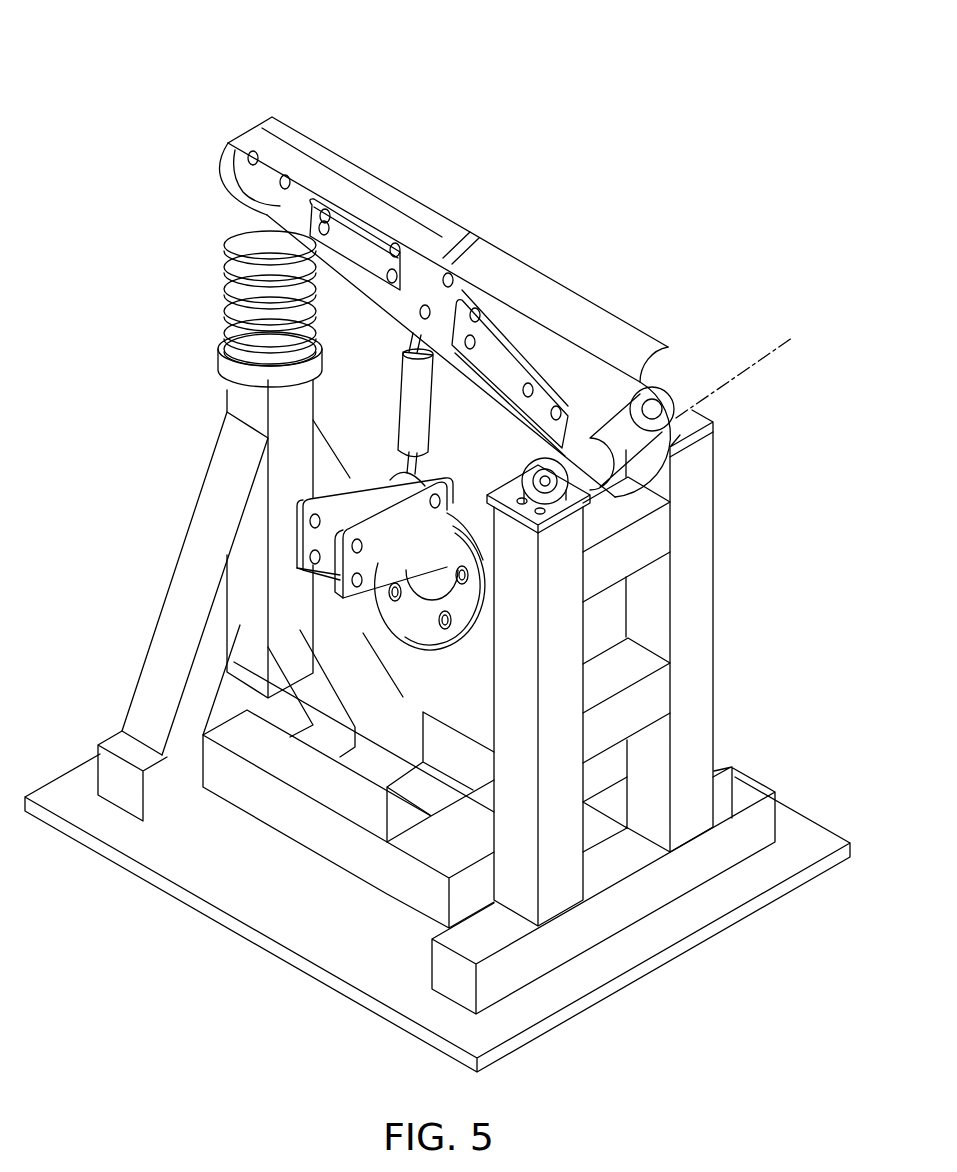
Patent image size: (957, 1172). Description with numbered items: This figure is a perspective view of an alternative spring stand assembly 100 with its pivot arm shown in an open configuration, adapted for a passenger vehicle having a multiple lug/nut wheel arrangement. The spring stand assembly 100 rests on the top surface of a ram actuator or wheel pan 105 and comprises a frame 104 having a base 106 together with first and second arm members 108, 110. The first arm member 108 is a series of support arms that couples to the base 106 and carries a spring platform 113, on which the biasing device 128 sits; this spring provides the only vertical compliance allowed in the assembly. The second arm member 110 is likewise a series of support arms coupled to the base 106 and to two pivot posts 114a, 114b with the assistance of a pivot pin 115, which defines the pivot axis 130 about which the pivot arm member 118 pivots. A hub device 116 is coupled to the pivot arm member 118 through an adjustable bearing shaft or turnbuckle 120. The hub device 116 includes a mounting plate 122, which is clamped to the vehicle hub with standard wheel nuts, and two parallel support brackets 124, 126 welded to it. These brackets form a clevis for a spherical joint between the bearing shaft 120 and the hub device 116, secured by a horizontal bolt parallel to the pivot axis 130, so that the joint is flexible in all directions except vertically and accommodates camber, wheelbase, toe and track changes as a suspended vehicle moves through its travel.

The spring stand assembly 100 is at (143, 149).
The frame 104 is at (655, 657).
The ram actuator or wheel pan 105 is at (388, 962).
The base 106 is at (290, 830).
The first arm member 108 is at (142, 642).
The second arm member 110 is at (503, 697).
The spring platform 113 is at (217, 353).
The pivot post 114a is at (512, 488).
The pivot post 114b is at (723, 469).
The pivot pin 115 is at (640, 412).
The hub device 116 is at (488, 571).
The pivot arm member 118 is at (528, 294).
The bearing shaft 120 is at (402, 408).
The mounting plate 122 is at (400, 612).
The support bracket 124 is at (297, 544).
The support bracket 126 is at (335, 566).
The biasing device 128 is at (226, 292).
The pivot axis 130 is at (748, 366).